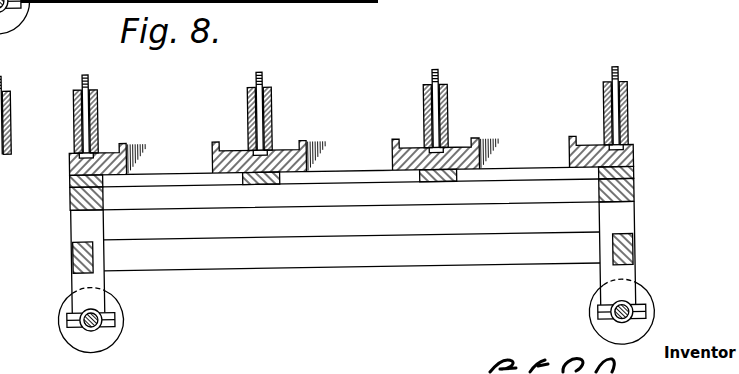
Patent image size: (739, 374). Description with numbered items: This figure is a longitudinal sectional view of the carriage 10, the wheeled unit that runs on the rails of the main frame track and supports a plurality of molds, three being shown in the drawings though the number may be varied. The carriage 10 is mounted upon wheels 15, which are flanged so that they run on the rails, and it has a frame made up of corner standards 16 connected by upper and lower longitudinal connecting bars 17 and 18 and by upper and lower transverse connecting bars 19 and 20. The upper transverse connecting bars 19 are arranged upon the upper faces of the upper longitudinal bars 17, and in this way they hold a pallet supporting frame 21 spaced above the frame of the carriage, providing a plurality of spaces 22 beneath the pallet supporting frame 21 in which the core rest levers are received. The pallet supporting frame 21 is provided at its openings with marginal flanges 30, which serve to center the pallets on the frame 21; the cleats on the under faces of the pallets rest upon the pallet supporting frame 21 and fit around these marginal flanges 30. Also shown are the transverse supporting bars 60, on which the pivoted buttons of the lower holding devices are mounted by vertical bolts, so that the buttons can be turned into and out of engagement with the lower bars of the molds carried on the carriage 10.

The carriage 10 is at (352, 283).
The wheels 15 is at (103, 340).
The corner standards 16 is at (75, 229).
The upper longitudinal connecting bars 17 is at (352, 195).
The lower longitudinal connecting bars 18 is at (352, 252).
The upper transverse connecting bars 19 is at (69, 172).
The lower transverse connecting bars 20 is at (72, 259).
The pallet supporting frame 21 is at (634, 167).
The spaces 22 is at (299, 180).
The marginal flanges 30 is at (476, 146).
The transverse supporting bars 60 is at (273, 106).